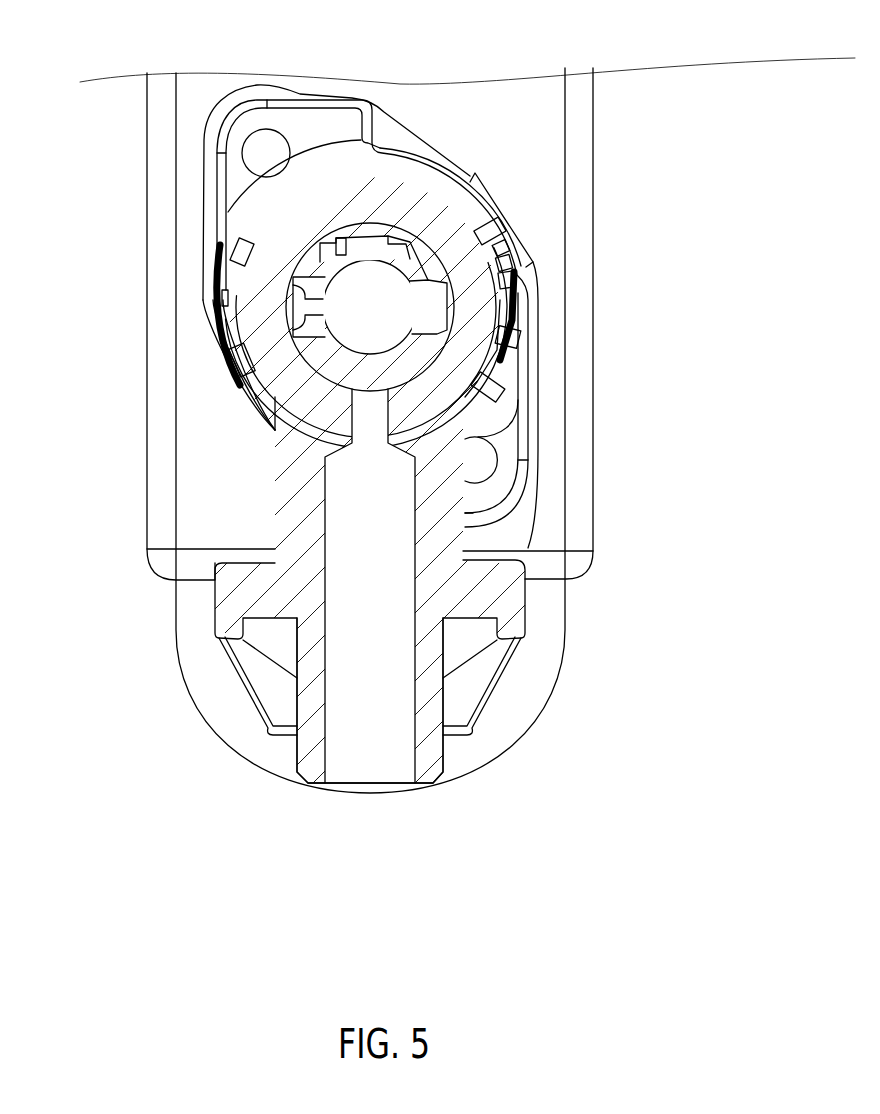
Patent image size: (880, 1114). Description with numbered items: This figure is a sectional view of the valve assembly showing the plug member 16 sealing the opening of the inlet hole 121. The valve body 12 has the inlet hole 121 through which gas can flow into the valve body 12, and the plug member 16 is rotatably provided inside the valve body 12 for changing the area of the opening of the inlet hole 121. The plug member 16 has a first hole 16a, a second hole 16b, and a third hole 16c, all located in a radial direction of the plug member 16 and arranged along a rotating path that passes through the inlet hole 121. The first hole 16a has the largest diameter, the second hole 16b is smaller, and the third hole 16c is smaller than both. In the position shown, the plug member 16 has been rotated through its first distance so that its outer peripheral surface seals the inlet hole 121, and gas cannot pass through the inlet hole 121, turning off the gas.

The valve body 12 is at (440, 400).
The inlet hole 121 is at (347, 580).
The plug member 16 is at (378, 207).
The first hole 16a is at (437, 305).
The second hole 16b is at (357, 252).
The third hole 16c is at (307, 305).